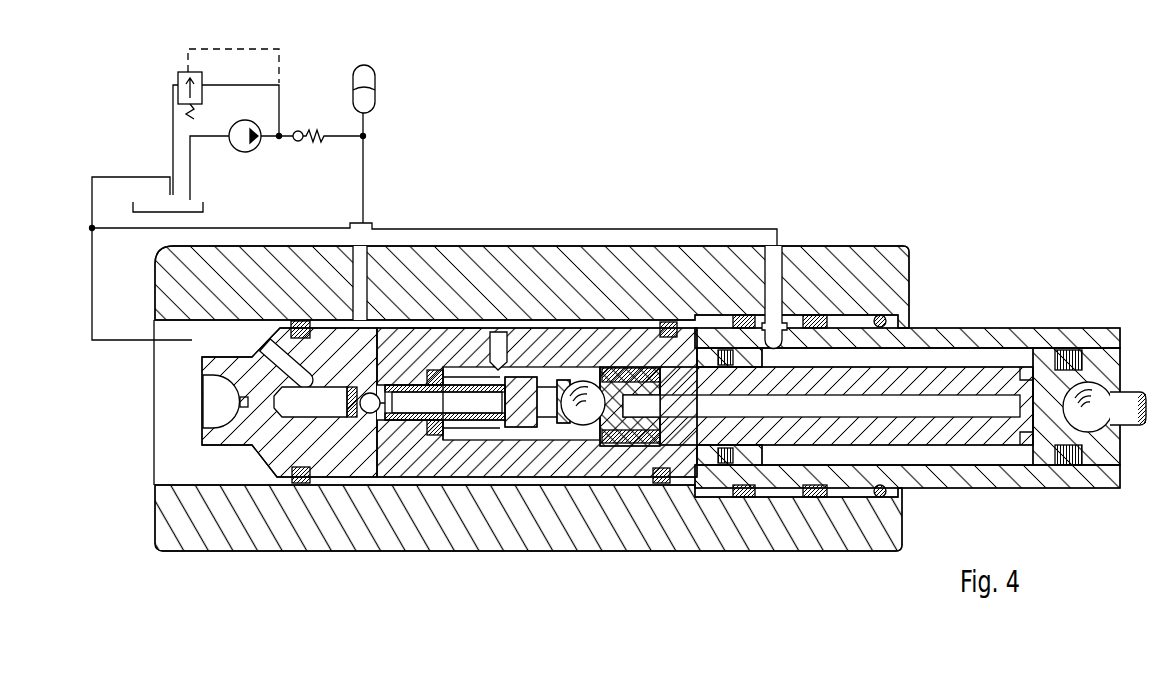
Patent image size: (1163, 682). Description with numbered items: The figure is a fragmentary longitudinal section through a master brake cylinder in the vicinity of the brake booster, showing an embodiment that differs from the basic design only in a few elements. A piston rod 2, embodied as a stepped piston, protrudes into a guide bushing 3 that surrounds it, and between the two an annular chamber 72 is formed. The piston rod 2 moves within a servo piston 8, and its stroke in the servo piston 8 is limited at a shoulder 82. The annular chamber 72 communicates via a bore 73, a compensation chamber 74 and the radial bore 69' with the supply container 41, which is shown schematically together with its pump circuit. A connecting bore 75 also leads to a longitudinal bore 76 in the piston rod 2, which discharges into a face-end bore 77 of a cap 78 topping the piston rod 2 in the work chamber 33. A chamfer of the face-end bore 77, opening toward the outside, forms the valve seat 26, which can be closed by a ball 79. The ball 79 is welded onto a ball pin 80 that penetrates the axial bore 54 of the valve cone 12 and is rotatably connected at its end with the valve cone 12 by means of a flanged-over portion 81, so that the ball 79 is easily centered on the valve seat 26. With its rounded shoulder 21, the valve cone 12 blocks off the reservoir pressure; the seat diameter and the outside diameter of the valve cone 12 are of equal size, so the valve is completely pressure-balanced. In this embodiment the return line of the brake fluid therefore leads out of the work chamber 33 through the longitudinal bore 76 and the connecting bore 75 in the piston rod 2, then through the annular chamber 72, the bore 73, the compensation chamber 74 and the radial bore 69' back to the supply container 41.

The piston rod 2 is at (1000, 430).
The guide bushing 3 is at (1043, 340).
The servo piston 8 is at (530, 455).
The valve cone 12 is at (481, 332).
The rounded shoulder 21 is at (500, 425).
The valve seat 26 is at (613, 425).
The work chamber 33 is at (587, 328).
The supply container 41 is at (203, 211).
The axial bore 54 is at (442, 328).
The radial bore 69' is at (792, 252).
The annular chamber 72 is at (965, 357).
The bore 73 is at (783, 322).
The compensation chamber 74 is at (778, 338).
The connecting bore 75 is at (1025, 380).
The longitudinal bore 76 is at (877, 410).
The face-end bore 77 is at (614, 328).
The cap 78 is at (637, 328).
The ball 79 is at (590, 415).
The ball pin 80 is at (480, 403).
The flanged-over portion 81 is at (380, 415).
The shoulder 82 is at (632, 455).